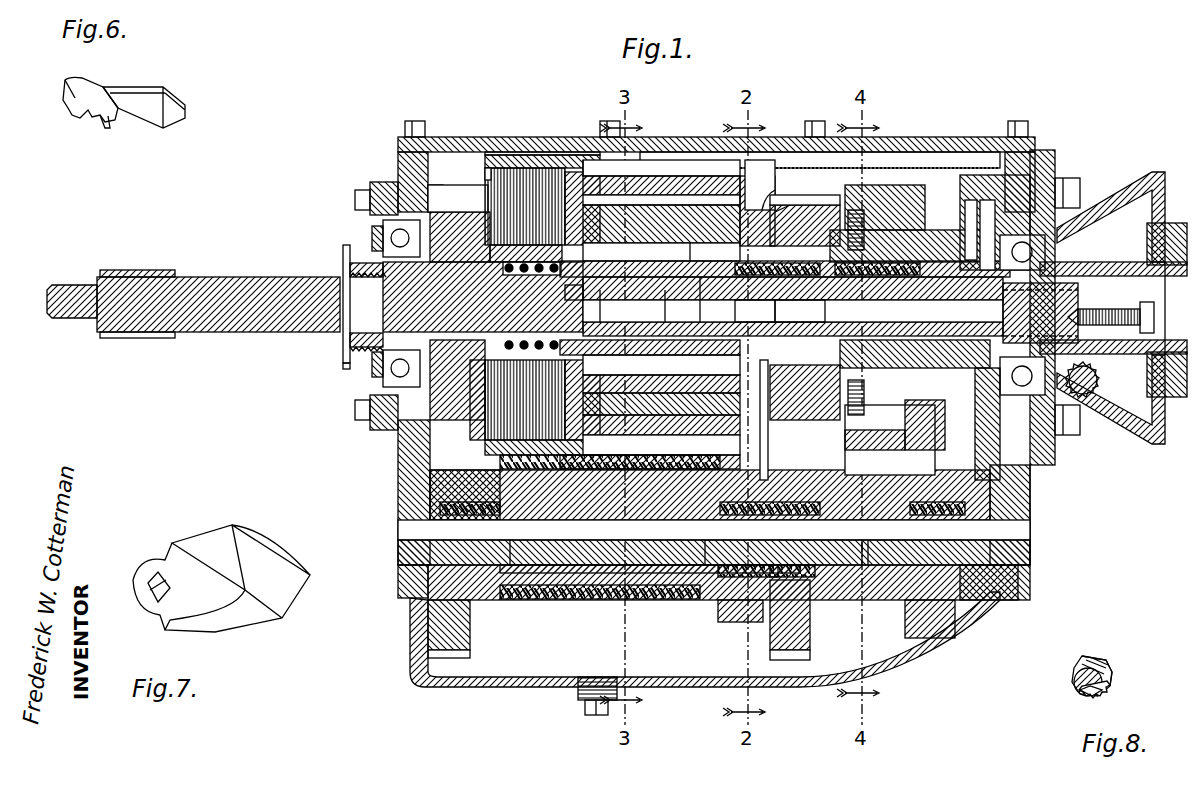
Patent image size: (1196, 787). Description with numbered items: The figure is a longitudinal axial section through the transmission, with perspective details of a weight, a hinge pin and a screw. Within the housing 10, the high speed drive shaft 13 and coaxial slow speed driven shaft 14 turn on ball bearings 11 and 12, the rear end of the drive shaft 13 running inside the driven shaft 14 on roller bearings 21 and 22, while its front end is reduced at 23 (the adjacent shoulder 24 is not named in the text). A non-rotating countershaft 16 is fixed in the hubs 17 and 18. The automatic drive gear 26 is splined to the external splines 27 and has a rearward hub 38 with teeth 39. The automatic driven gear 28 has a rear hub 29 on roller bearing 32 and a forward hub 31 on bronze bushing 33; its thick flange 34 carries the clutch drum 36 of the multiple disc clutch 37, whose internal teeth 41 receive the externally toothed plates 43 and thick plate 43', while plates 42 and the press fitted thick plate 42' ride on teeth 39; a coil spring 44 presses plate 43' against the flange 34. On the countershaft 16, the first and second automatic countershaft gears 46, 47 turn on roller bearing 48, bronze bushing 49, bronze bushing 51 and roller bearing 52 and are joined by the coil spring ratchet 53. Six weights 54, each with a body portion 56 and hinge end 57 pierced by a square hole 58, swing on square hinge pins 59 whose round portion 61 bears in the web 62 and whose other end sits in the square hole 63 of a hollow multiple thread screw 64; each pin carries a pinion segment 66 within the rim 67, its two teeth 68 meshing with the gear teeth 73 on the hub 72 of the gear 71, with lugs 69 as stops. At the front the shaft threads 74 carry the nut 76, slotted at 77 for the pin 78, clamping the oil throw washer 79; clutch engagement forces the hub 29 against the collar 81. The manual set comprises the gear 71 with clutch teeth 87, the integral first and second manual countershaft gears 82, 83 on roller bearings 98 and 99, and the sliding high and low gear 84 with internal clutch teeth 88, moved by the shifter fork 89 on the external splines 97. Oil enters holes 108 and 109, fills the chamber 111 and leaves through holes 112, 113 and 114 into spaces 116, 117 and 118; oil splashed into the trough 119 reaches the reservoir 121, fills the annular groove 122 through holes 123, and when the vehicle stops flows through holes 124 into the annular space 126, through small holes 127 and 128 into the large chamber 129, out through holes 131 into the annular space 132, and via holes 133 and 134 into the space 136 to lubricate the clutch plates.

In FIG. 1, the housing 10 is at (398, 165).
In FIG. 1, the ball bearing 11 is at (372, 228).
In FIG. 1, the ball bearing 12 is at (1048, 250).
In FIG. 1, the high speed drive shaft 13 is at (262, 278).
In FIG. 1, the slow speed driven shaft 14 is at (1125, 330).
In FIG. 1, the countershaft 16 is at (398, 552).
In FIG. 1, the hub 17 is at (405, 598).
In FIG. 1, the hub 18 is at (1003, 600).
In FIG. 1, the roller bearing 21 is at (910, 262).
In FIG. 1, the roller bearing 22 is at (1040, 313).
In FIG. 1, the reduced diameter portion 23 is at (58, 286).
In FIG. 1, the shaft shoulder 24 is at (130, 271).
In FIG. 1, the automatic drive gear 26 is at (457, 200).
In FIG. 1, the external splines 27 is at (462, 282).
In FIG. 1, the automatic driven gear 28 is at (735, 170).
In FIG. 1, the hub 29 is at (661, 232).
In FIG. 1, the hub 31 is at (681, 251).
In FIG. 1, the roller bearing 32 is at (795, 262).
In FIG. 1, the bronze bushing 33 is at (661, 251).
In FIG. 1, the flange 34 is at (661, 168).
In FIG. 1, the clutch drum 36 is at (485, 157).
In FIG. 1, the multiple disc clutch 37 is at (520, 155).
In FIG. 1, the hub 38 is at (490, 255).
In FIG. 1, the teeth 39 is at (470, 375).
In FIG. 1, the internal teeth 41 is at (485, 172).
In FIG. 1, the clutch plates 42 is at (590, 400).
In FIG. 1, the clutch plate 42' is at (459, 223).
In FIG. 1, the clutch plates 43 is at (524, 208).
In FIG. 1, the clutch plate 43' is at (601, 168).
In FIG. 1, the coil spring 44 is at (520, 342).
In FIG. 1, the first automatic countershaft gear 46 is at (470, 640).
In FIG. 1, the second automatic countershaft gear 47 is at (737, 618).
In FIG. 1, the roller bearing 48 is at (465, 495).
In FIG. 1, the bronze bushing 49 is at (572, 568).
In FIG. 1, the bronze bushing 51 is at (632, 568).
In FIG. 1, the roller bearing 52 is at (745, 567).
In FIG. 1, the coil spring ratchet 53 is at (588, 600).
In FIG. 7, the weights 54 is at (245, 632).
In FIG. 1, the body portion 56 is at (650, 360).
In FIG. 7, the body portion 56 is at (222, 540).
In FIG. 1, the hinge end 57 is at (661, 423).
In FIG. 7, the hinge end 57 is at (138, 575).
In FIG. 7, the square hole 58 is at (152, 600).
In FIG. 1, the square hinge pin 59 is at (664, 188).
In FIG. 6, the square hinge pin 59 is at (172, 100).
In FIG. 1, the round portion 61 is at (661, 445).
In FIG. 1, the web 62 is at (722, 371).
In FIG. 8, the square hole 63 is at (1082, 692).
In FIG. 1, the multiple thread screw 64 is at (583, 247).
In FIG. 8, the multiple thread screw 64 is at (1110, 690).
In FIG. 1, the pinion segment 66 is at (776, 192).
In FIG. 6, the pinion segment 66 is at (100, 92).
In FIG. 1, the rim 67 is at (760, 180).
In FIG. 1, the teeth 68 is at (789, 202).
In FIG. 6, the teeth 68 is at (74, 117).
In FIG. 6, the lugs 69 is at (65, 87).
In FIG. 1, the gear 71 is at (840, 210).
In FIG. 1, the hub 72 is at (805, 220).
In FIG. 1, the gear teeth 73 is at (770, 386).
In FIG. 1, the threads 74 is at (350, 268).
In FIG. 1, the nut 76 is at (346, 250).
In FIG. 1, the slot 77 is at (350, 340).
In FIG. 1, the pin 78 is at (343, 366).
In FIG. 1, the oil throw washer 79 is at (383, 370).
In FIG. 1, the collar 81 is at (823, 280).
In FIG. 1, the first manual countershaft gear 82 is at (810, 650).
In FIG. 1, the second manual countershaft gear 83 is at (928, 638).
In FIG. 1, the sliding high and low gear 84 is at (898, 435).
In FIG. 1, the clutch teeth 87 is at (856, 212).
In FIG. 1, the internal clutch teeth 88 is at (848, 400).
In FIG. 1, the shifter fork 89 is at (925, 425).
In FIG. 1, the external splines 97 is at (1000, 380).
In FIG. 1, the roller bearing 98 is at (800, 567).
In FIG. 1, the roller bearing 99 is at (702, 512).
In FIG. 1, the hole 108 is at (1010, 490).
In FIG. 1, the hole 109 is at (408, 475).
In FIG. 1, the chamber 111 is at (1010, 525).
In FIG. 1, the hole 112 is at (870, 540).
In FIG. 1, the hole 113 is at (684, 540).
In FIG. 1, the hole 114 is at (512, 540).
In FIG. 1, the space 116 is at (852, 512).
In FIG. 1, the space 117 is at (710, 487).
In FIG. 1, the space 118 is at (508, 520).
In FIG. 1, the trough 119 is at (900, 165).
In FIG. 1, the reservoir 121 is at (1010, 155).
In FIG. 1, the annular groove 122 is at (985, 225).
In FIG. 1, the holes 123 is at (990, 200).
In FIG. 1, the holes 124 is at (968, 245).
In FIG. 1, the annular space 126 is at (952, 375).
In FIG. 1, the small hole 127 is at (915, 348).
In FIG. 1, the small hole 128 is at (925, 313).
In FIG. 1, the large chamber 129 is at (759, 311).
In FIG. 1, the holes 131 is at (693, 310).
In FIG. 1, the annular space 132 is at (686, 310).
In FIG. 1, the hole 133 is at (590, 310).
In FIG. 1, the hole 134 is at (566, 292).
In FIG. 1, the space 136 is at (540, 275).